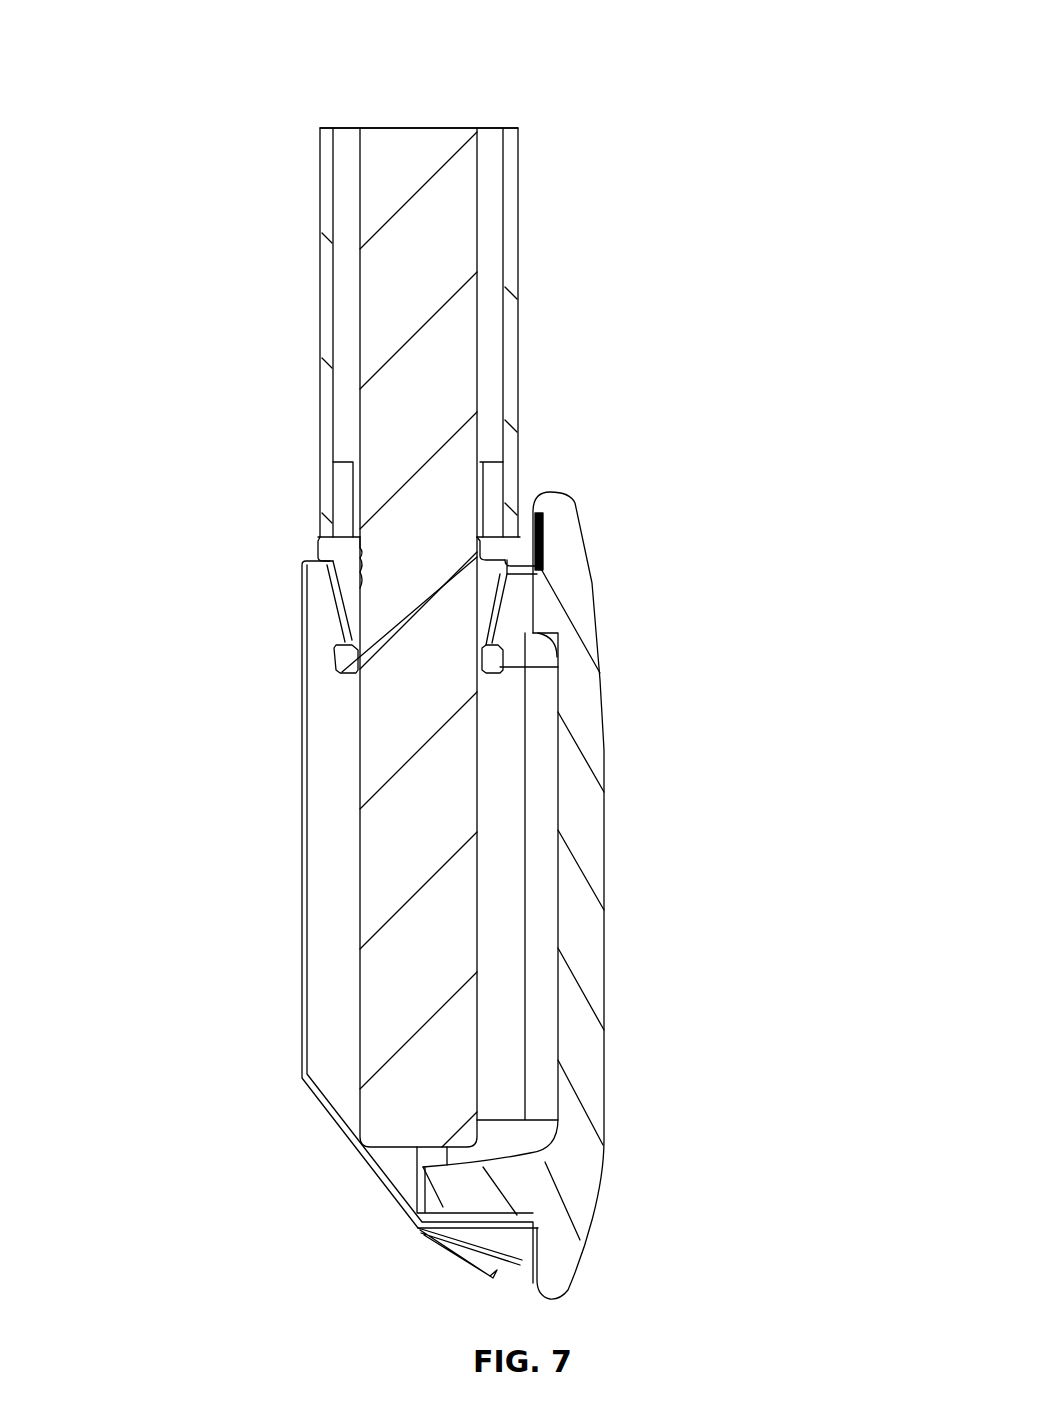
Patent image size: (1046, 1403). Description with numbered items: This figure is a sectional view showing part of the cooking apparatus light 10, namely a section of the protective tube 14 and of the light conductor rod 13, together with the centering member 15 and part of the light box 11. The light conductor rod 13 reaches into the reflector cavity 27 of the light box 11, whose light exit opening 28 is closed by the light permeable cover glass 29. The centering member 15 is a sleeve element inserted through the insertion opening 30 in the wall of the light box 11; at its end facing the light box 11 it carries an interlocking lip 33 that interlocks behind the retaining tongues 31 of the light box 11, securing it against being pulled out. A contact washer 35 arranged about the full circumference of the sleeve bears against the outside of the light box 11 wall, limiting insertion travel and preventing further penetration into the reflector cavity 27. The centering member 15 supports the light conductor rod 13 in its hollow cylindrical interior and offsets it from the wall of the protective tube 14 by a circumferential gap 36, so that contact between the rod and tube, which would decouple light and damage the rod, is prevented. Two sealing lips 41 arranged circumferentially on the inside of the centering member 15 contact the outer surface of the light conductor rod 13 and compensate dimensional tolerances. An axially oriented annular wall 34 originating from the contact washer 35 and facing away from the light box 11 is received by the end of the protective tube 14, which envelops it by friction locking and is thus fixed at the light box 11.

The cooking apparatus light 10 is at (738, 182).
The light box 11 is at (290, 955).
The light conductor rod 13 is at (428, 288).
The protective tube 14 is at (528, 218).
The centering member 15 is at (312, 548).
The reflector cavity 27 is at (333, 1046).
The light exit opening 28 is at (542, 1008).
The cover glass 29 is at (604, 961).
The insertion opening 30 is at (522, 588).
The retaining tongues 31 is at (507, 615).
The interlocking lip 33 is at (493, 680).
The annular wall 34 is at (347, 472).
The contact washer 35 is at (318, 545).
The circumferential gap 36 is at (493, 163).
The sealing lip 41 is at (458, 564).